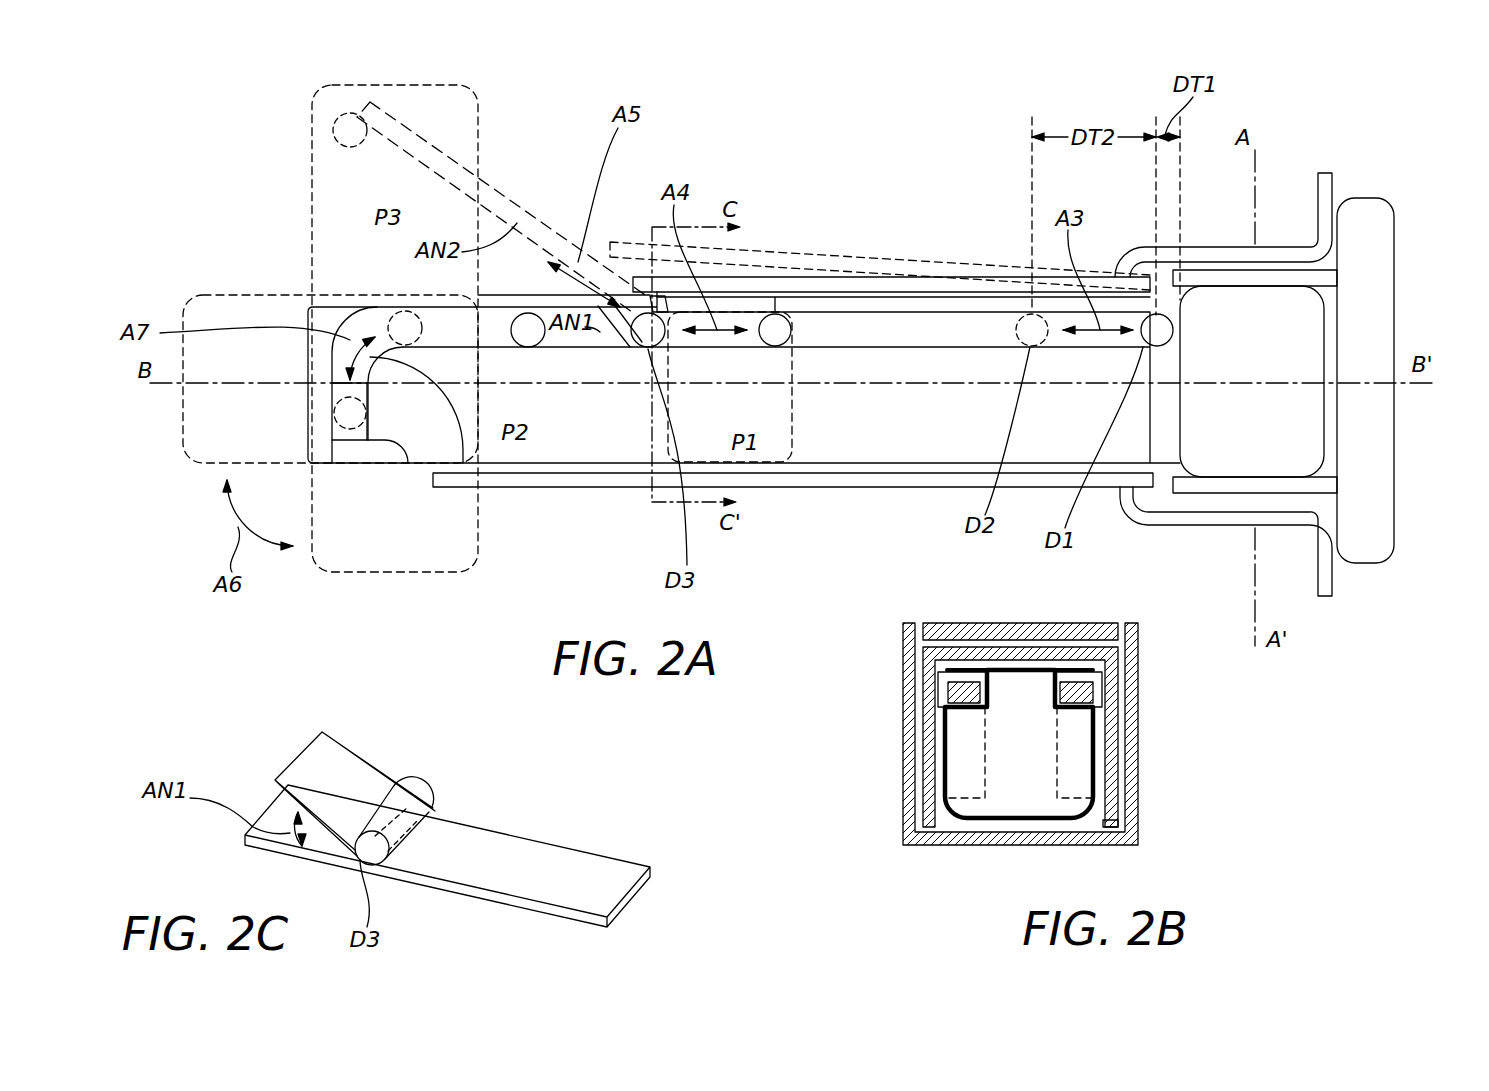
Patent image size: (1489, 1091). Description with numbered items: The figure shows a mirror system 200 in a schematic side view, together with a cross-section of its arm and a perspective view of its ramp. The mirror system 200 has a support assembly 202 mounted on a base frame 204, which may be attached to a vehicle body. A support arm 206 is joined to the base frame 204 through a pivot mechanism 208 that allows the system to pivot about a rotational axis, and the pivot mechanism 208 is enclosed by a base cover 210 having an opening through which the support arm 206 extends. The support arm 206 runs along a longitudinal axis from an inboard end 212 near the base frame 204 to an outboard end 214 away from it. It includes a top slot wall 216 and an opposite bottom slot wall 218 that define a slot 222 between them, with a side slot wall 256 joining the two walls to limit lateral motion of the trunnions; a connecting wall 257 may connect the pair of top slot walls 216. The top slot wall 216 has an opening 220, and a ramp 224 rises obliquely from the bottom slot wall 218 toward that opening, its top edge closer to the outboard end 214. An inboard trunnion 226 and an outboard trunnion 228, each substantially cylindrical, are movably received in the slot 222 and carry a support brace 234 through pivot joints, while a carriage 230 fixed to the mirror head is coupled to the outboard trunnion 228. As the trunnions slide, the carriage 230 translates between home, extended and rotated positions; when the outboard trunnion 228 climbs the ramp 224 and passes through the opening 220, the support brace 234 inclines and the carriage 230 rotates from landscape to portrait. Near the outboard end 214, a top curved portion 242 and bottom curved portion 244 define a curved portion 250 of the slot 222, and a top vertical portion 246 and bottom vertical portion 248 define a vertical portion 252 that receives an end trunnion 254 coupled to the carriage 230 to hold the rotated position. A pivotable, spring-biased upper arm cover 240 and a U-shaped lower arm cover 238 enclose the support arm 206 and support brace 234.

In FIG. 2A, the mirror system 200 is at (1048, 90).
In FIG. 2A, the support assembly 202 is at (898, 198).
In FIG. 2A, the base frame 204 is at (1370, 226).
In FIG. 2A, the support arm 206 is at (925, 488).
In FIG. 2B, the support arm 206 is at (1100, 818).
In FIG. 2A, the pivot mechanism 208 is at (1240, 460).
In FIG. 2A, the base cover 210 is at (1285, 526).
In FIG. 2A, the inboard end 212 is at (1161, 478).
In FIG. 2A, the outboard end 214 is at (307, 468).
In FIG. 2A, the top slot wall 216 is at (742, 310).
In FIG. 2B, the top slot wall 216 is at (957, 632).
In FIG. 2A, the bottom slot wall 218 is at (755, 347).
In FIG. 2B, the bottom slot wall 218 is at (930, 743).
In FIG. 2C, the bottom slot wall 218 is at (547, 917).
In FIG. 2A, the opening 220 is at (603, 298).
In FIG. 2A, the slot 222 is at (742, 338).
In FIG. 2B, the slot 222 is at (945, 676).
In FIG. 2A, the ramp 224 is at (600, 353).
In FIG. 2C, the ramp 224 is at (340, 780).
In FIG. 2A, the inboard trunnion 226 is at (1030, 330).
In FIG. 2C, the inboard trunnion 226 is at (420, 793).
In FIG. 2A, the outboard trunnion 228 is at (340, 122).
In FIG. 2B, the outboard trunnion 228 is at (975, 690).
In FIG. 2C, the outboard trunnion 228 is at (396, 829).
In FIG. 2A, the carriage 230 is at (792, 320).
In FIG. 2B, the carriage 230 is at (963, 713).
In FIG. 2A, the support brace 234 is at (920, 300).
In FIG. 2B, the lower arm cover 238 is at (903, 793).
In FIG. 2A, the upper arm cover 240 is at (772, 287).
In FIG. 2B, the upper arm cover 240 is at (960, 677).
In FIG. 2A, the top curved portion 242 is at (403, 317).
In FIG. 2A, the bottom curved portion 244 is at (463, 463).
In FIG. 2A, the top vertical portion 246 is at (332, 425).
In FIG. 2A, the bottom vertical portion 248 is at (408, 463).
In FIG. 2A, the curved portion 250 is at (330, 310).
In FIG. 2A, the vertical portion 252 is at (340, 400).
In FIG. 2A, the end trunnion 254 is at (385, 308).
In FIG. 2B, the side slot wall 256 is at (1050, 683).
In FIG. 2B, the connecting wall 257 is at (1035, 668).